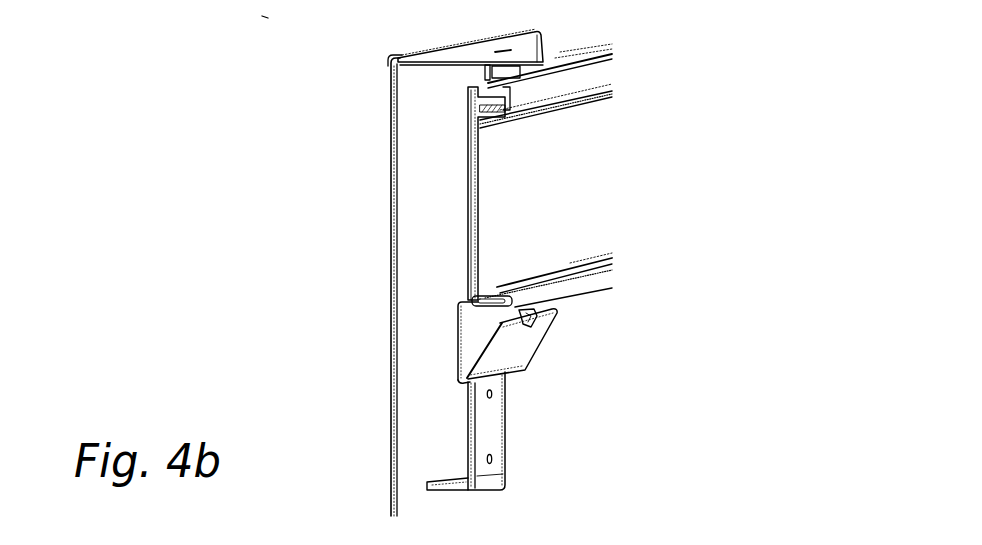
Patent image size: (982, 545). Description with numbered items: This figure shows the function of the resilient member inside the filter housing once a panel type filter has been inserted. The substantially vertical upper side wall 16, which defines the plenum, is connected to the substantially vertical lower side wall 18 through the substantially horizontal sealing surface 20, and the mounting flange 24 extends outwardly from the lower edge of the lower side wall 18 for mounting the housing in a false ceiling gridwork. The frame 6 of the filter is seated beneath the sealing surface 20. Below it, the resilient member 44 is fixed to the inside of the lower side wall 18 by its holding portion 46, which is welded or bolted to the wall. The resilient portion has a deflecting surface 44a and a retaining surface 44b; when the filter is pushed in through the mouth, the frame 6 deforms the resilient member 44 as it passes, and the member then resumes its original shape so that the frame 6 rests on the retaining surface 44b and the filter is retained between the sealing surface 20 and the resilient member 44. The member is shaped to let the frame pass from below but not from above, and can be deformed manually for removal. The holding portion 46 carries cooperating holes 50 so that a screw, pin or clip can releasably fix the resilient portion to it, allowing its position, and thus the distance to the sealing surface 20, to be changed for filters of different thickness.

The frame 6 is at (480, 137).
The side wall 16 is at (542, 32).
The lower side wall 18 is at (397, 235).
The sealing surface 20 is at (430, 68).
The mounting flange 24 is at (252, 10).
The resilient member 44 is at (455, 360).
The deflecting surface 44a is at (542, 337).
The retaining surface 44b is at (540, 307).
The holding portion 46 is at (470, 408).
The cooperating holes 50 is at (493, 395).